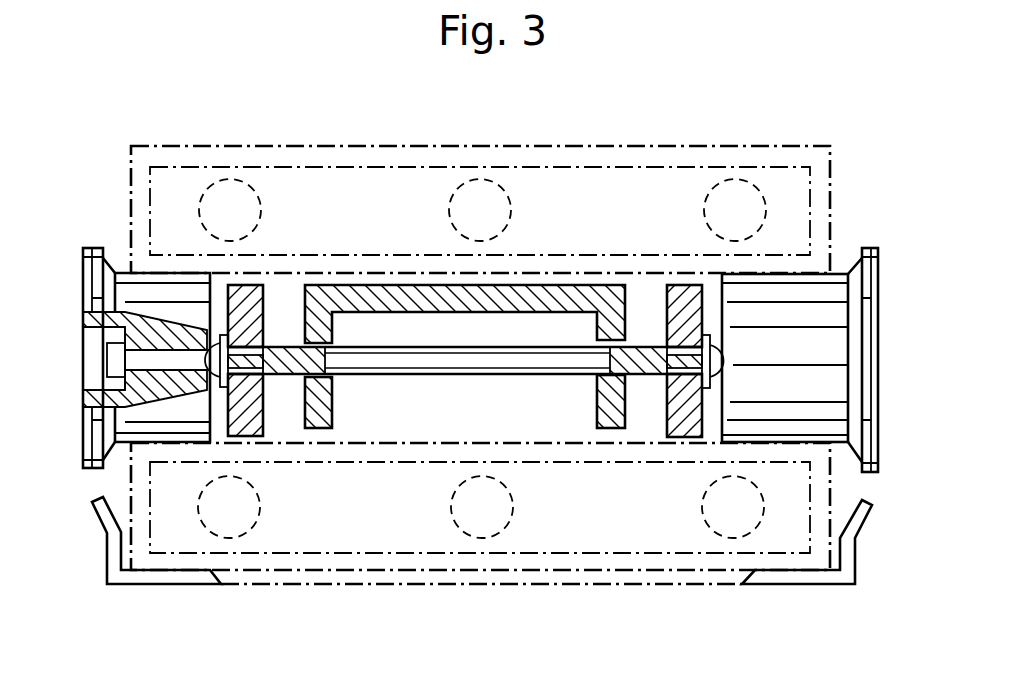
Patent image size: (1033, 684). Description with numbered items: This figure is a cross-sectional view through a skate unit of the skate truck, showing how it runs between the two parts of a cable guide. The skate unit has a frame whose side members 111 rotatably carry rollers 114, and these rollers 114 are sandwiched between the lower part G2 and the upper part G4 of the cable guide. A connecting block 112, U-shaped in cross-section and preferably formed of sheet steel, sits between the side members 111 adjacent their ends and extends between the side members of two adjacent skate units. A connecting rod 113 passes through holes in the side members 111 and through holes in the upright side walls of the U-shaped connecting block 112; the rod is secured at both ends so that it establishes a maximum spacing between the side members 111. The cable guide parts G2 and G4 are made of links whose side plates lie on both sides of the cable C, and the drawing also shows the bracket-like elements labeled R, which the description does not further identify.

The side member 111 is at (258, 415).
The connecting block 112 is at (407, 303).
The connecting rod 113 is at (508, 365).
The roller 114 is at (88, 247).
The cable C is at (229, 180).
The retaining bracket R is at (162, 586).
The upper part of the cable guide G4 is at (603, 150).
The lower part of the cable guide G2 is at (585, 562).